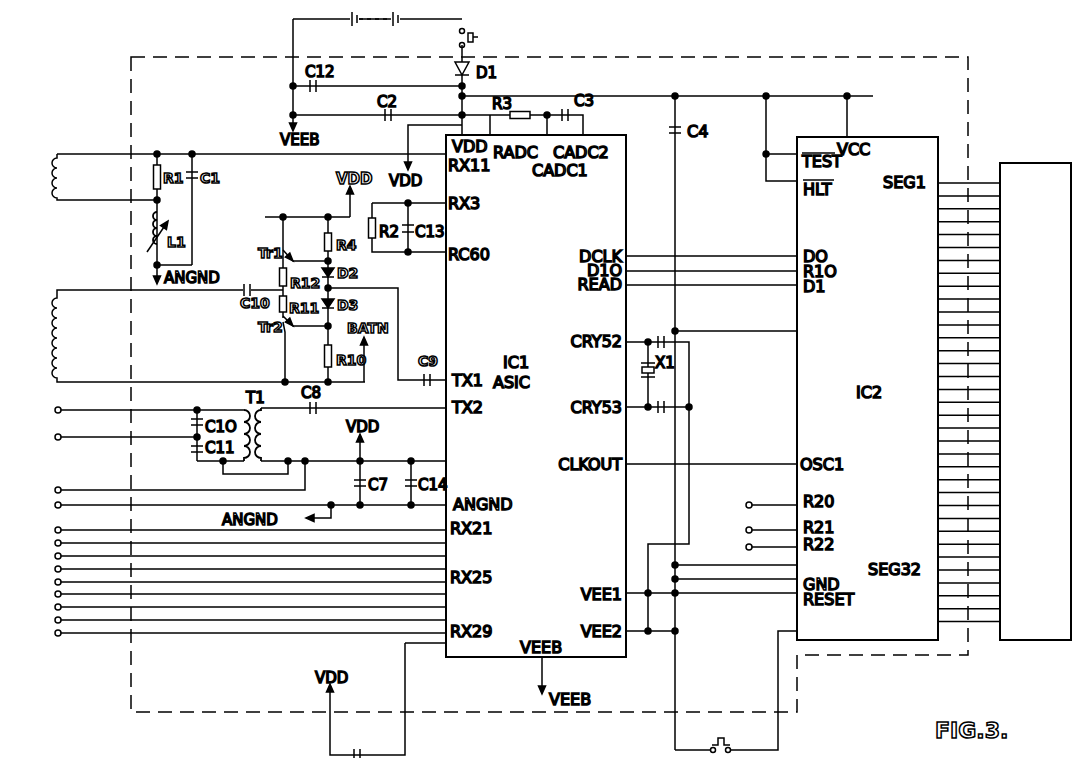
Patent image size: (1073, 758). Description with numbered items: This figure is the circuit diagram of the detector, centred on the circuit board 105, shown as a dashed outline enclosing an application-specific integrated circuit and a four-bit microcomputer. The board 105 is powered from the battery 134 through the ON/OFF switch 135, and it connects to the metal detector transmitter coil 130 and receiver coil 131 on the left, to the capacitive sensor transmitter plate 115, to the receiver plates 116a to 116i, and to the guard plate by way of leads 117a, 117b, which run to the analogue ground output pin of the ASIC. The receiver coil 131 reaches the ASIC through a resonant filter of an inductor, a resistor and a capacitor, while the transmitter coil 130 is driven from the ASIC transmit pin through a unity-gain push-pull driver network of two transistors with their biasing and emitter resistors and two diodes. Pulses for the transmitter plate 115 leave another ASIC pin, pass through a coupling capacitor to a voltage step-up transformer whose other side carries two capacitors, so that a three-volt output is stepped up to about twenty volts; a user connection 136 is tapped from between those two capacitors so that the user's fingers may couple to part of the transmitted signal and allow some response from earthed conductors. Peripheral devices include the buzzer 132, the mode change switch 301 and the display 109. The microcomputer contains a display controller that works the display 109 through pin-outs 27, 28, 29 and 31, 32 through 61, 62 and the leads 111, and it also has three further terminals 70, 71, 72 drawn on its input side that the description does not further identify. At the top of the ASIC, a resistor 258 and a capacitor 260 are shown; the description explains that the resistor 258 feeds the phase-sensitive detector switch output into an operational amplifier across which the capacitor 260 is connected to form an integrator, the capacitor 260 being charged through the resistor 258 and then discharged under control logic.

The circuit board 105 is at (797, 683).
The display 109 is at (1043, 632).
The leads 111 is at (981, 212).
The capacitive sensor transmitter plate 115 is at (66, 410).
The metal detector transmitter coil 130 is at (62, 322).
The metal detector receiver coil 131 is at (62, 176).
The buzzer 132 is at (361, 745).
The battery 134 is at (360, 30).
The ON/OFF switch 135 is at (480, 40).
The user connection 136 is at (72, 439).
The receiver plate 116a is at (68, 530).
The receiver plate 116i is at (74, 636).
The lead 117a is at (70, 490).
The lead 117b is at (92, 504).
The resistor 258 is at (528, 110).
The capacitor 260 is at (573, 112).
The mode change switch 301 is at (732, 745).
The terminal R20 70 is at (771, 500).
The terminal R21 71 is at (771, 524).
The terminal R22 72 is at (771, 541).
The pin-out 31 is at (947, 178).
The pin-out 32 is at (947, 191).
The pin-out 61 is at (947, 565).
The pin-out 62 is at (947, 578).
The pin-out 27 is at (947, 591).
The pin-out 28 is at (947, 604).
The pin-out 29 is at (947, 617).